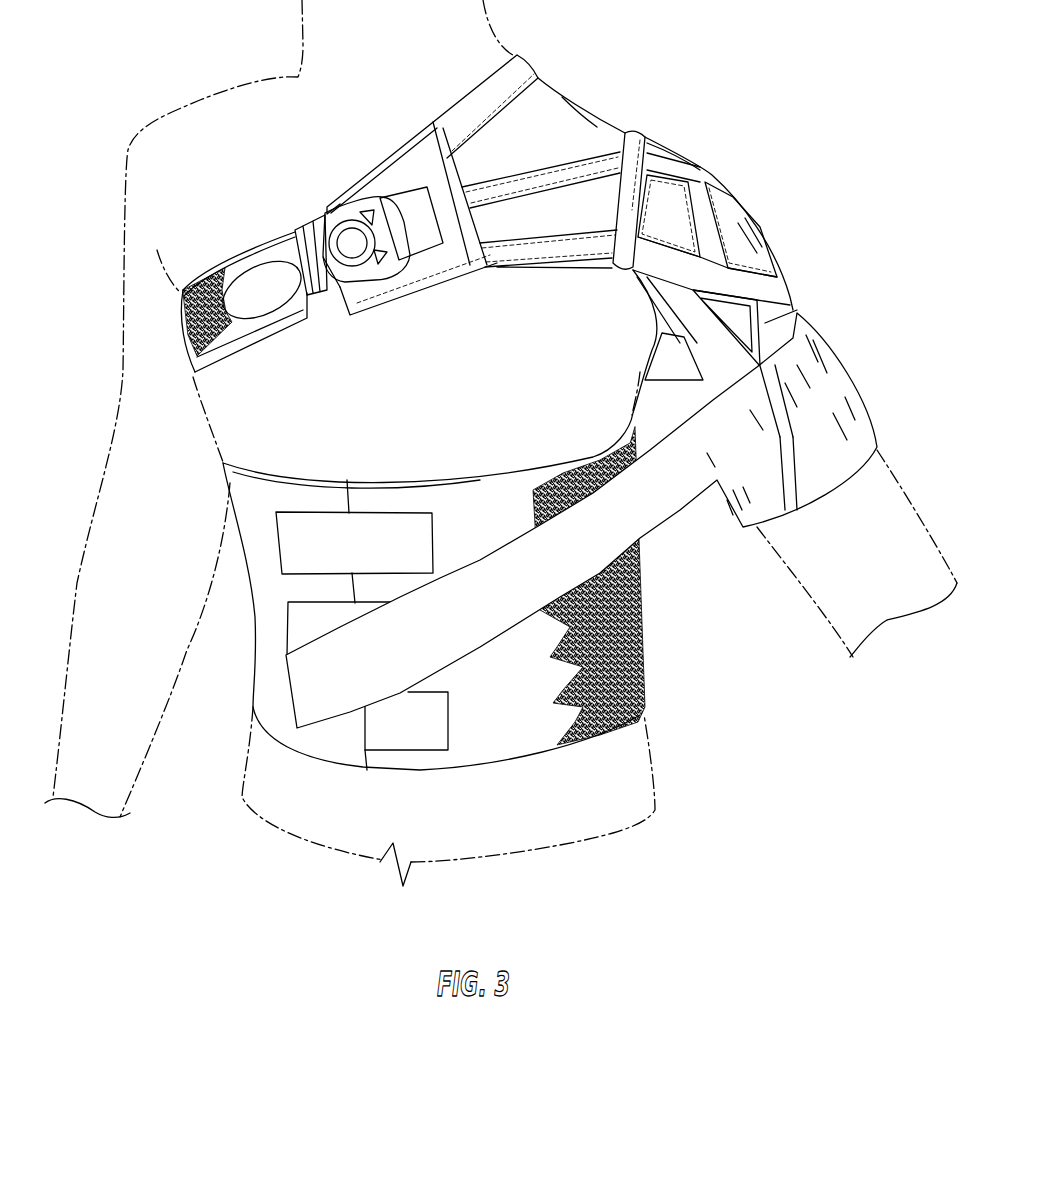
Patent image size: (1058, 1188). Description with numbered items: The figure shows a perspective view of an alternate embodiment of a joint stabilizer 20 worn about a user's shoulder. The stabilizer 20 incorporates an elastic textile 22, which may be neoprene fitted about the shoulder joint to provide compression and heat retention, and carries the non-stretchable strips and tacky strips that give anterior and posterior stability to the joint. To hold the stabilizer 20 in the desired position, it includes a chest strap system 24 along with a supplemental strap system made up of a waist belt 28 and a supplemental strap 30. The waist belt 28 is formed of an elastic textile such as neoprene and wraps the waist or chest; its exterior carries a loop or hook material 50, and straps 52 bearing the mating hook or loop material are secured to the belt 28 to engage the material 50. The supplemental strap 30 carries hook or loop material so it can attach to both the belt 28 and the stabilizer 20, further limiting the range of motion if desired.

The joint stabilizer 20 is at (683, 104).
The elastic textile 22 is at (563, 97).
The chest strap system 24 is at (224, 238).
The waist belt 28 is at (481, 520).
The supplemental strap 30 is at (571, 567).
The loop material 50 is at (637, 607).
The straps 52 is at (362, 555).